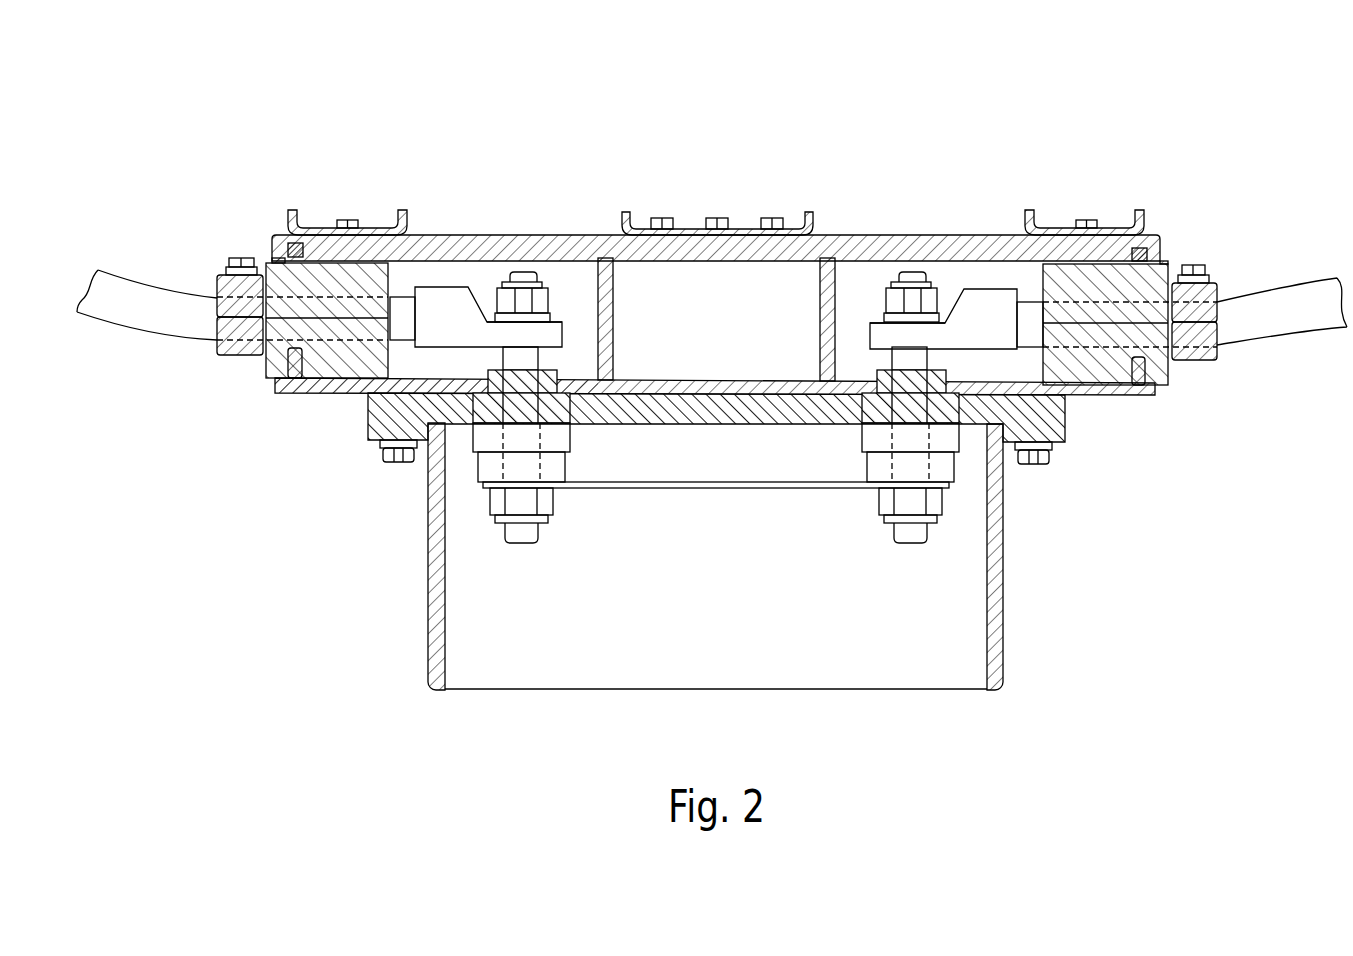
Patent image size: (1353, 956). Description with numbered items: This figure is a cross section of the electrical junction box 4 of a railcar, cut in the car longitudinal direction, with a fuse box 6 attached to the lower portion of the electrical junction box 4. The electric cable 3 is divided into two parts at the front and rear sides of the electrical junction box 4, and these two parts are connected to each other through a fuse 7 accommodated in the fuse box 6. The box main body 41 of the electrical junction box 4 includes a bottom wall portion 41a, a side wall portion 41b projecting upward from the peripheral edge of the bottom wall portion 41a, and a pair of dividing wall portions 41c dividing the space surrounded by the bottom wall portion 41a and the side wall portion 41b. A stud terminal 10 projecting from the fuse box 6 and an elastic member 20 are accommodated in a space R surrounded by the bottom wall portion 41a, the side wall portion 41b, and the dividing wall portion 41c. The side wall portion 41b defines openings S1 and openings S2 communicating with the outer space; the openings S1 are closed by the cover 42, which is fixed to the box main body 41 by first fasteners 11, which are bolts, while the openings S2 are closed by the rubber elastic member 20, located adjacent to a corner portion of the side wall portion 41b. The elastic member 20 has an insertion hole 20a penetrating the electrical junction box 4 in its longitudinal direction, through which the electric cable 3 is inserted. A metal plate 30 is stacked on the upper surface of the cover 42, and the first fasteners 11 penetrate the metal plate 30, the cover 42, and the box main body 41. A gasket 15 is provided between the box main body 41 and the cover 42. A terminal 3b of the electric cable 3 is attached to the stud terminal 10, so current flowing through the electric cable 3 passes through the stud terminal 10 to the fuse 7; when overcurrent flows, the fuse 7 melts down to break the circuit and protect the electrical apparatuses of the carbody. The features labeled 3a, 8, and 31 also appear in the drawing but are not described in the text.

The electric cable 3 is at (100, 323).
The bus bar connecting end portion 3a is at (405, 295).
The terminal 3b is at (560, 322).
The electrical junction box 4 is at (530, 225).
The fuse box 6 is at (428, 645).
The fuse 7 is at (686, 488).
The fastening nut 8 is at (217, 350).
The stud terminal 10 is at (545, 358).
The first fasteners 11 is at (347, 220).
The gasket 15 is at (268, 238).
The elastic member 20 is at (370, 268).
The insertion hole 20a is at (307, 297).
The metal plate 30 is at (288, 213).
The fastening bolt 31 is at (540, 532).
The box main body 41 is at (1093, 396).
The bottom wall portion 41a is at (327, 393).
The side wall portion 41b is at (294, 380).
The dividing wall portions 41c is at (605, 300).
The cover 42 is at (862, 393).
The space R is at (473, 363).
The openings S1 is at (445, 280).
The openings S2 is at (268, 372).